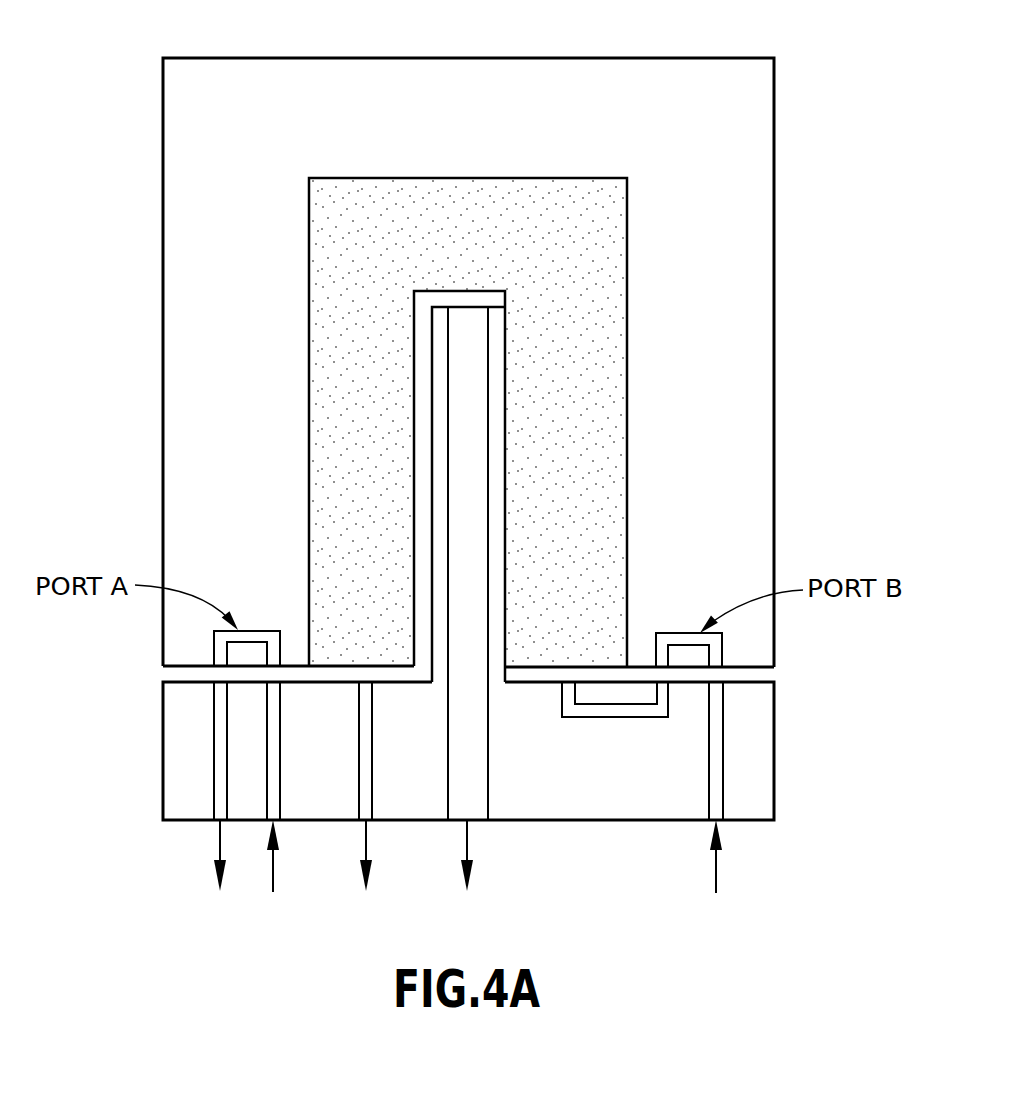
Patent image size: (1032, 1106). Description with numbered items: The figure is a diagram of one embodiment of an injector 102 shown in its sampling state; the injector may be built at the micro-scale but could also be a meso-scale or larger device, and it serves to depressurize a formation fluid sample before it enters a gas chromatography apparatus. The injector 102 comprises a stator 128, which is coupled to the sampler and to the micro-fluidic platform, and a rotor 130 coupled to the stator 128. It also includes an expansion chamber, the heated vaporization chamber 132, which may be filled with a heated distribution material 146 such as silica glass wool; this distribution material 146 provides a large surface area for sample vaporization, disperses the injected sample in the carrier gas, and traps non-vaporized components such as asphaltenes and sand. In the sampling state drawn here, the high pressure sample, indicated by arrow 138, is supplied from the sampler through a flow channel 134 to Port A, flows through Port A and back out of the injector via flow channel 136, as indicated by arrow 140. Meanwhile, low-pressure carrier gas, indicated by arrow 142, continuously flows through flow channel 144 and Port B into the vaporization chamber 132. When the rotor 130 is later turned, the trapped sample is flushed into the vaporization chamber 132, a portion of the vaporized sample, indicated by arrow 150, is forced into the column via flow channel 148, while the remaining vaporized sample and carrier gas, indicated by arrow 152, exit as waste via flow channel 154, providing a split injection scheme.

The injector 102 is at (706, 33).
The stator 128 is at (772, 757).
The rotor 130 is at (212, 56).
The vaporization chamber 132 is at (627, 285).
The flow channel 134 is at (275, 726).
The flow channel 136 is at (219, 748).
The high pressure sample flow 138 is at (275, 874).
The sample outflow 140 is at (217, 874).
The low-pressure carrier gas flow 142 is at (717, 807).
The flow channel 144 is at (714, 745).
The distribution material 146 is at (613, 207).
The flow channel 148 is at (477, 788).
The vaporized sample flow to column 150 is at (469, 874).
The waste flow 152 is at (363, 874).
The flow channel 154 is at (373, 775).